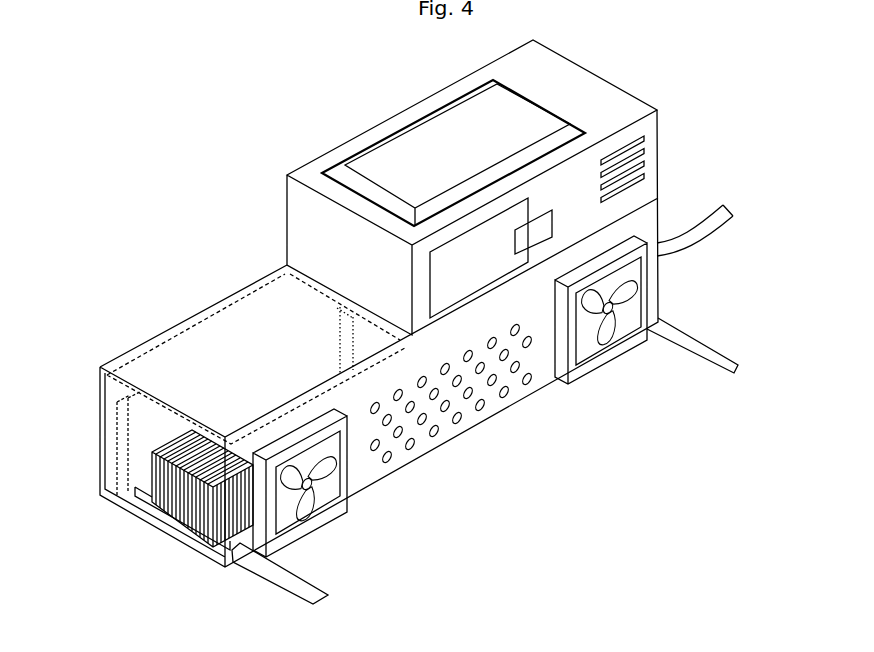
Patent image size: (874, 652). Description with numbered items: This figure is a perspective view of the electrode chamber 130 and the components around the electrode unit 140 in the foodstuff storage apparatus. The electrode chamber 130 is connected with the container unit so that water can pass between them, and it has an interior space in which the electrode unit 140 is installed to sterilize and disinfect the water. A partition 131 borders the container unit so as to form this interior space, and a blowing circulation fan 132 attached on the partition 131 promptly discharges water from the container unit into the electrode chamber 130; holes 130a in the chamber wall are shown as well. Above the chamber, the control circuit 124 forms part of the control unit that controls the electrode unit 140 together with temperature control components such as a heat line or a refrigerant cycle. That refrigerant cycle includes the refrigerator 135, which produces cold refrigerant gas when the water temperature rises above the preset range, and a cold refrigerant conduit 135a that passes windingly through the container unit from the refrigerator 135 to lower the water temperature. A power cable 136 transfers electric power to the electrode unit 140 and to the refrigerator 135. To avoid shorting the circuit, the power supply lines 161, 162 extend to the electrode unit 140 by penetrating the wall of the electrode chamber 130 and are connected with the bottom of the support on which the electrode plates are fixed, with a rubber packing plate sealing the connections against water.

The electrode chamber 130 is at (170, 293).
The control circuit 124 is at (165, 348).
The refrigerator 135 is at (410, 137).
The cold refrigerant conduit 135a is at (337, 340).
The power cable 136 is at (703, 235).
The partition 131 is at (625, 333).
The blowing circulation fan 132 is at (320, 486).
The vent holes 130a is at (450, 403).
The electrode unit 140 is at (180, 520).
The power supply line 161 is at (117, 459).
The power supply line 162 is at (130, 422).